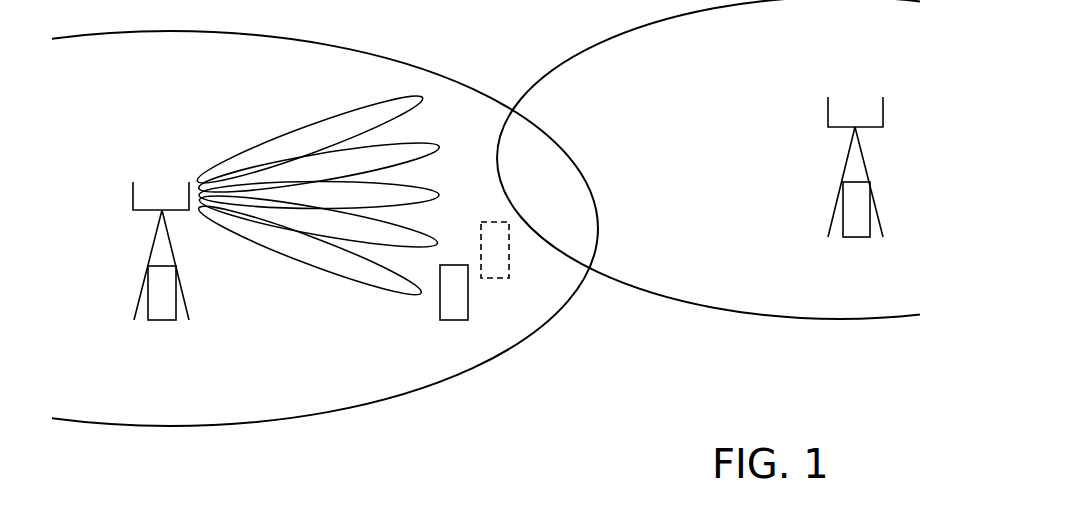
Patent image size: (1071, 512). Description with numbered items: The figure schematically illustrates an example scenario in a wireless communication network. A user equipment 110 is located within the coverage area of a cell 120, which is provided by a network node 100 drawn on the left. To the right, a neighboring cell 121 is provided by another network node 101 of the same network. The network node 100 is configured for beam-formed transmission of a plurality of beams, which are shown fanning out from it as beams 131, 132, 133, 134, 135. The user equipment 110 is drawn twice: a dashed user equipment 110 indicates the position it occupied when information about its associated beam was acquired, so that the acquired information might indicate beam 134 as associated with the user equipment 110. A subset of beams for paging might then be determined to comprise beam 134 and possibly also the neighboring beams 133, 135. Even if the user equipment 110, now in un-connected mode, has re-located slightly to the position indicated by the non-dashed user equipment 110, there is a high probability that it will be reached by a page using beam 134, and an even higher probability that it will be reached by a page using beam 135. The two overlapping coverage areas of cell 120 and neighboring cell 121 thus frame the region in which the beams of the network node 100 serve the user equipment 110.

The network node 100 is at (162, 320).
The another network node 101 is at (855, 237).
The user equipment 110 is at (453, 320).
The cell 120 is at (375, 405).
The neighboring cell 121 is at (800, 318).
The beam 131 is at (310, 139).
The beam 132 is at (318, 168).
The beam 133 is at (319, 195).
The beam 134 is at (318, 222).
The beam 135 is at (310, 251).